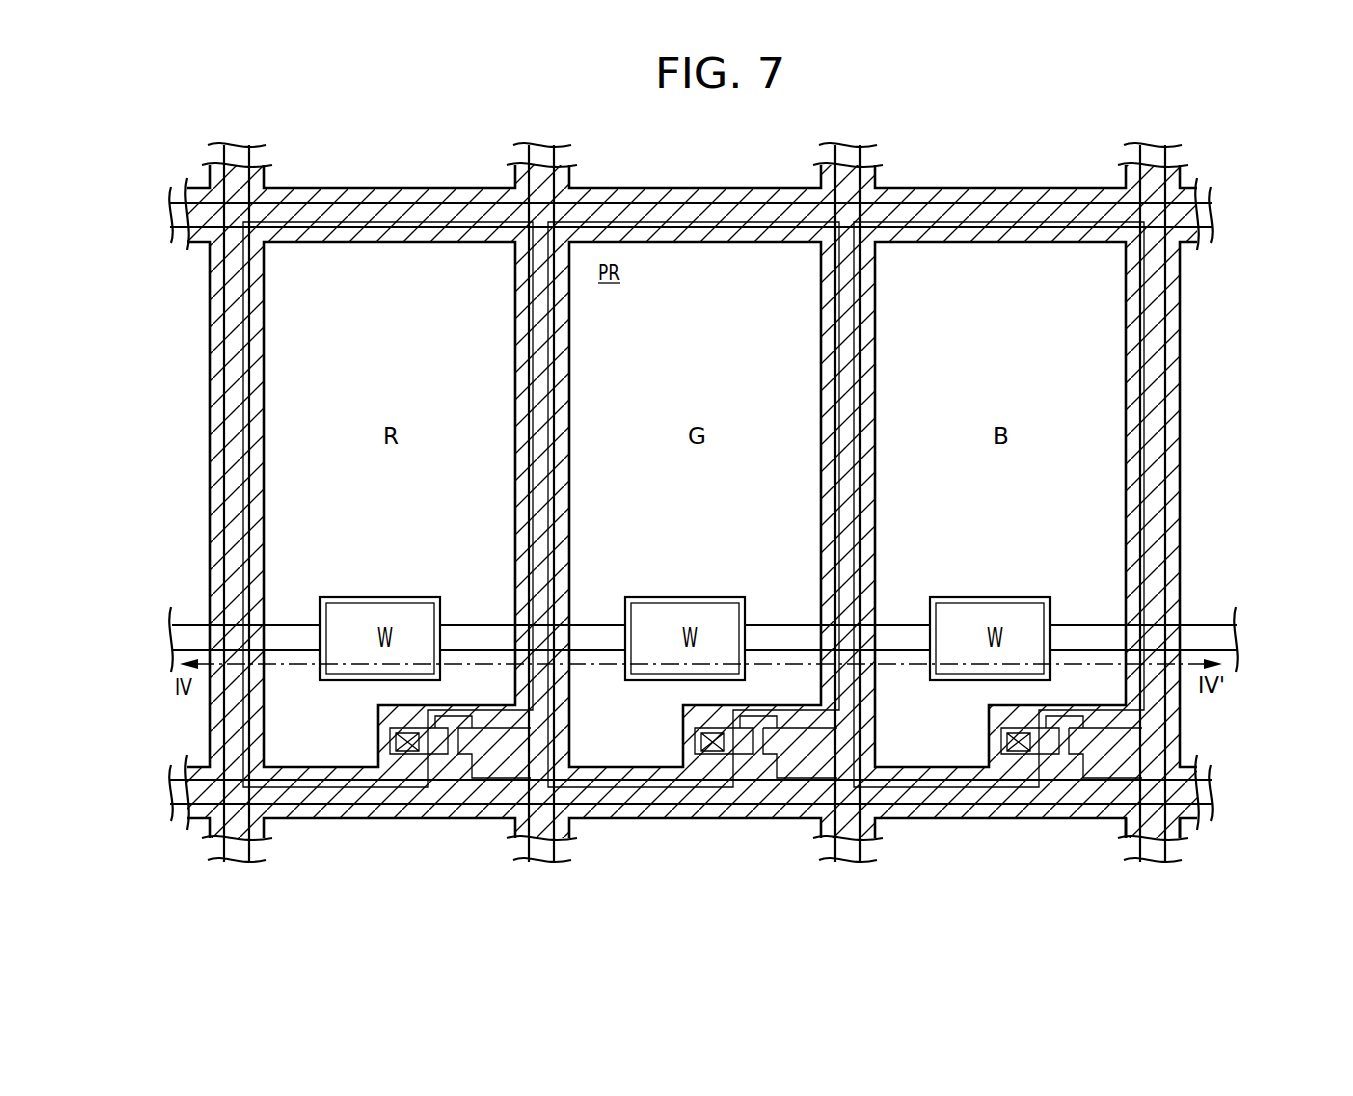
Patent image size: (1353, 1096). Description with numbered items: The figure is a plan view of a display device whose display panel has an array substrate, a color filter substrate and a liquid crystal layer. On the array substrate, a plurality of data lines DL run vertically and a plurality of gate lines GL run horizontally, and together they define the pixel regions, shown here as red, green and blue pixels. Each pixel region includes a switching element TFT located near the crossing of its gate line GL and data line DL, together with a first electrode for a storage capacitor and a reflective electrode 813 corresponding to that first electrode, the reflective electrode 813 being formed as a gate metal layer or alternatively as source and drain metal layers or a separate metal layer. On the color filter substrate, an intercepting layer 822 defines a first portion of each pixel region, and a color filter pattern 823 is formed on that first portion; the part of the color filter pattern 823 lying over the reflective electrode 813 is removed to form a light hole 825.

The intercepting layer 822 is at (1157, 592).
The color filter pattern 823 is at (1092, 463).
The reflective electrode 813 is at (995, 597).
The light hole 825 is at (1020, 612).
The gate line GL is at (1205, 801).
The data line DL is at (1152, 852).
The switching element TFT is at (1017, 755).